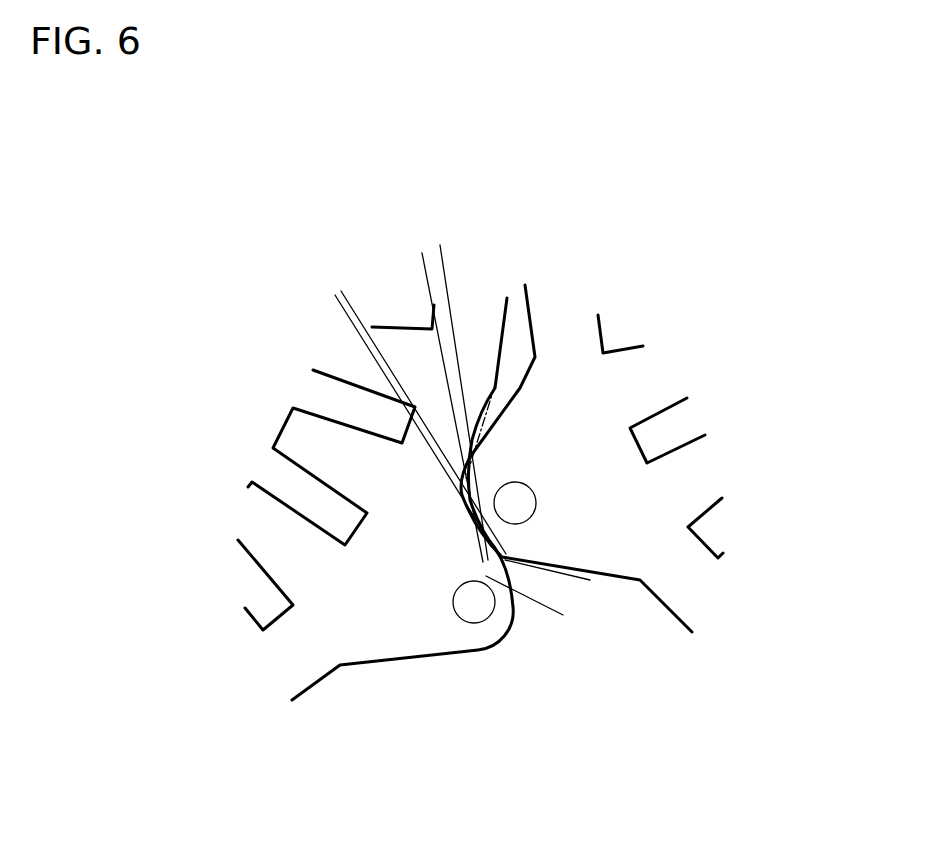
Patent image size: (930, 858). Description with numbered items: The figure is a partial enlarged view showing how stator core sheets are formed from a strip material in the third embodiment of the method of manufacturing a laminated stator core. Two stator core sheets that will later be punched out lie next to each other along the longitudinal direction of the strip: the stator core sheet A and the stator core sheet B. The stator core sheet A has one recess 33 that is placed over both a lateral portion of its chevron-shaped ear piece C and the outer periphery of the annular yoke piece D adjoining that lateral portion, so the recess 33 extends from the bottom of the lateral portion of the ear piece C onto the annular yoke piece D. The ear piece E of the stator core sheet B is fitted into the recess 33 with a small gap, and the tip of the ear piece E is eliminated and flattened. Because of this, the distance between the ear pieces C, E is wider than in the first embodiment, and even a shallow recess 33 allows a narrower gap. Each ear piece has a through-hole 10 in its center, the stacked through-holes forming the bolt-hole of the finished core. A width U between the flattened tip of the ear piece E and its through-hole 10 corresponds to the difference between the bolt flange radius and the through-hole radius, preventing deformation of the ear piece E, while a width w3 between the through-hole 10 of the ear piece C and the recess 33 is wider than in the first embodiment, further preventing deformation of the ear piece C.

The through-hole 10 is at (515, 503).
The recess 33 is at (502, 565).
The stator core sheet A is at (320, 687).
The stator core sheet B is at (690, 634).
The ear piece C is at (403, 640).
The annular yoke piece D is at (488, 325).
The ear piece E is at (533, 413).
The width of area between tip of ear piece E and through-hole U is at (467, 265).
The width of area between through-hole and recess w3 is at (562, 573).